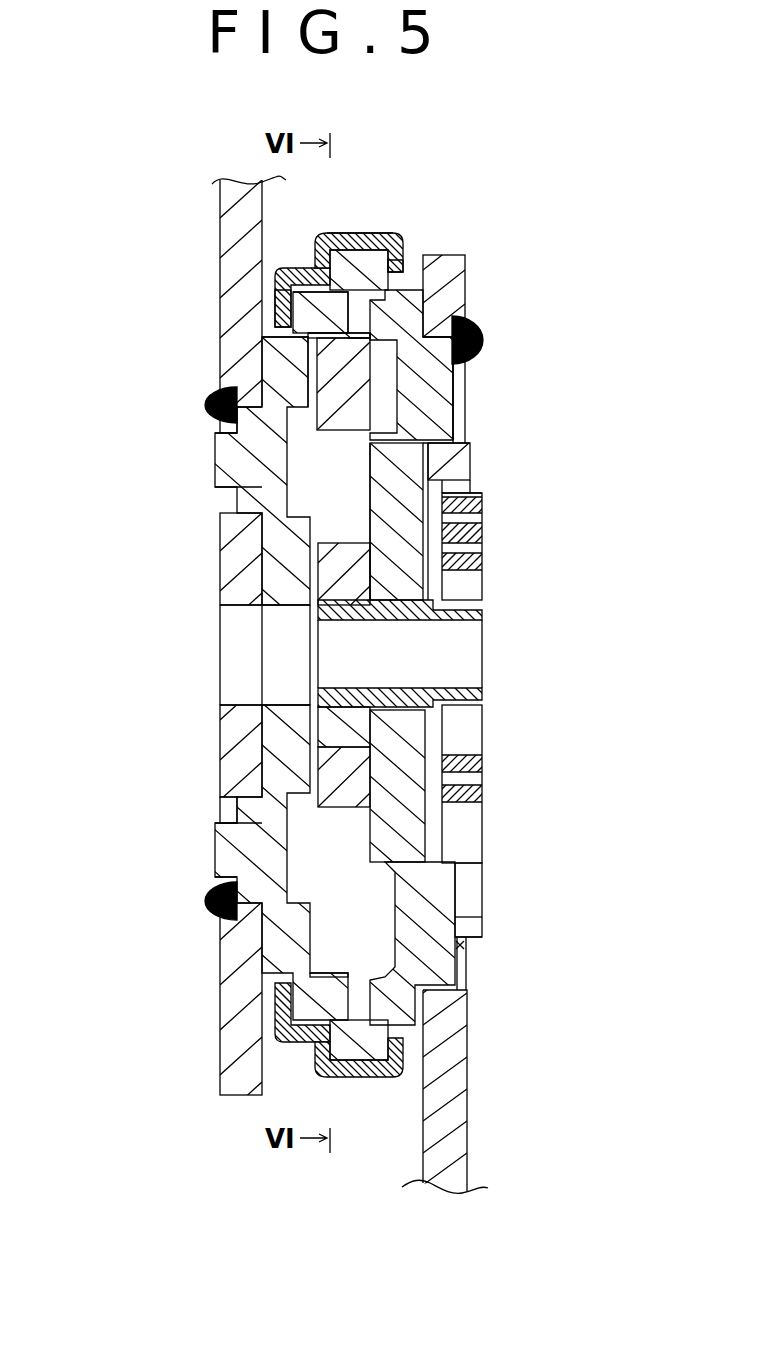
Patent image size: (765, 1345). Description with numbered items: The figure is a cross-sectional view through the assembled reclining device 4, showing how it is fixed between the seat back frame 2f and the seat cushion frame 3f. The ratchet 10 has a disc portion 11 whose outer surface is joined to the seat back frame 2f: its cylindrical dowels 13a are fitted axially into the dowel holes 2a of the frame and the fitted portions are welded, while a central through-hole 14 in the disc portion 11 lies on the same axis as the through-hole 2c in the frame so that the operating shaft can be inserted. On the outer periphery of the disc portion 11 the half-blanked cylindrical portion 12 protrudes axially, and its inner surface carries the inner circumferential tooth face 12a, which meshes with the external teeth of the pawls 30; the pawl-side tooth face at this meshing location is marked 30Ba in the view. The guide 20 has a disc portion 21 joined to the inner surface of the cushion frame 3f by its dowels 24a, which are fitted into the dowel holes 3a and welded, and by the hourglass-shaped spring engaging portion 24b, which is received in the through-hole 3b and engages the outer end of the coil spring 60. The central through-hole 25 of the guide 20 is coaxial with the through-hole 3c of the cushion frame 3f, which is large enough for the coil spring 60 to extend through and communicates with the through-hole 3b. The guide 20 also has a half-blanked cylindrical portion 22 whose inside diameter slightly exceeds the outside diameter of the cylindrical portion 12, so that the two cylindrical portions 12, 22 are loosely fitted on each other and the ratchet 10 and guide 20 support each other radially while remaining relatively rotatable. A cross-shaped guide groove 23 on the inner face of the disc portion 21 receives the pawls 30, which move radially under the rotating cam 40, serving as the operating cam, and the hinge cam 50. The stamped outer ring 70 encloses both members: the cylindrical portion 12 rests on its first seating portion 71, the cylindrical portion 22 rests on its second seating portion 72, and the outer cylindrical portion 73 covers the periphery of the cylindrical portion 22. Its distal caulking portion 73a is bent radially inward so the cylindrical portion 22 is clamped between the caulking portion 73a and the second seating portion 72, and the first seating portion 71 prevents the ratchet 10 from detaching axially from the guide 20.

The seat back frame 2f is at (222, 210).
The dowel holes 2a is at (232, 500).
The through-hole 2c is at (262, 620).
The seat cushion frame 3f is at (467, 270).
The dowel holes 3a is at (465, 433).
The through-hole 3b is at (468, 945).
The through-hole 3c is at (445, 490).
The reclining device 4 is at (460, 155).
The ratchet 10 is at (262, 433).
The disc portion 11 is at (285, 392).
The cylindrical portion 12 is at (275, 272).
The inner circumferential tooth face 12a is at (195, 350).
The dowels 13a is at (235, 465).
The through-hole 14 is at (282, 688).
The guide 20 is at (432, 262).
The disc portion 21 is at (405, 520).
The cylindrical portion 22 is at (352, 265).
The guide groove 23 is at (385, 455).
The dowels 24a is at (435, 387).
The spring engaging portion 24b is at (430, 883).
The through-hole 25 is at (405, 698).
The pawls 30 is at (360, 372).
The spline of shaft member 30Ba is at (333, 343).
The rotating cam 40 is at (340, 559).
The hinge cam 50 is at (413, 624).
The coil spring 60 is at (477, 569).
The outer ring 70 is at (329, 227).
The first seating portion 71 is at (277, 325).
The second seating portion 72 is at (312, 268).
The cylindrical portion 73 is at (373, 238).
The caulking portion 73a is at (408, 283).